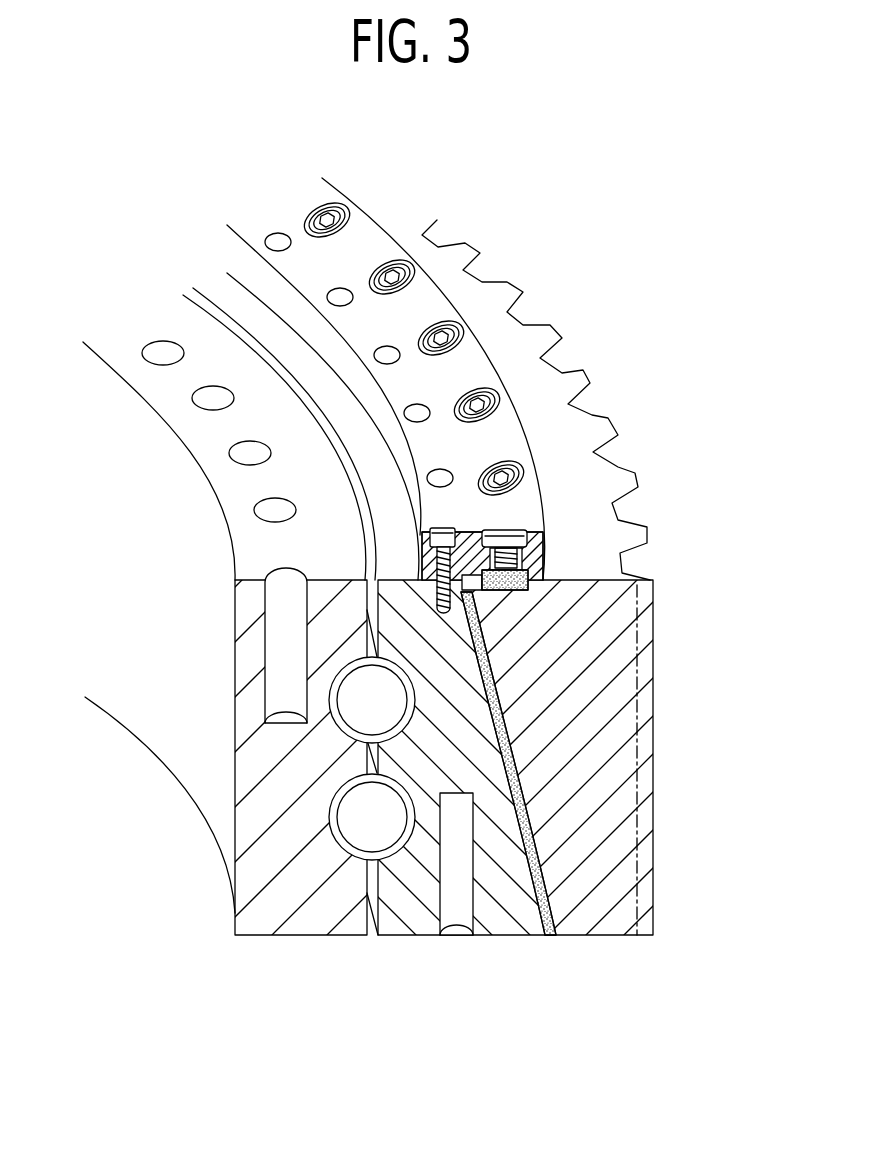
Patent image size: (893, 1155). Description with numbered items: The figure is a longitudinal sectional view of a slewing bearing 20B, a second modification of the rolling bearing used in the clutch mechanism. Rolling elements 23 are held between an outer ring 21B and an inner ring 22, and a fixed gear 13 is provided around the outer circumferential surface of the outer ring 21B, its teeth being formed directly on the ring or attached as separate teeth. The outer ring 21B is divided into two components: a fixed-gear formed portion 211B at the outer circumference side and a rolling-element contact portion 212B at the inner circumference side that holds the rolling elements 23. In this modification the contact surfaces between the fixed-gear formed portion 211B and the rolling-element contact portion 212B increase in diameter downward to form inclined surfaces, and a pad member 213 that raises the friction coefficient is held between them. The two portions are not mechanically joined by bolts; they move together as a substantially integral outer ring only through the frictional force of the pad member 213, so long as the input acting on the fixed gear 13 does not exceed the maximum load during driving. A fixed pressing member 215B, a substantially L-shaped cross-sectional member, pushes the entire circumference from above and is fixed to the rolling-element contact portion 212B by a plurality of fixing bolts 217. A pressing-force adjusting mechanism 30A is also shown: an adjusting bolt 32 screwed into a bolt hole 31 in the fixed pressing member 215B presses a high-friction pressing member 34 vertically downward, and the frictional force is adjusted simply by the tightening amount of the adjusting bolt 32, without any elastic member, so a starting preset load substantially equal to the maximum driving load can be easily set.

The fixed gear 13 is at (637, 492).
The slewing bearing 20B is at (637, 263).
The outer ring 21B is at (402, 937).
The inner ring 22 is at (313, 937).
The rolling elements 23 is at (357, 810).
The pressing-force adjusting mechanism 30A is at (512, 532).
The bolt hole 31 is at (543, 555).
The adjusting bolt 32 is at (490, 528).
The pressing member 34 is at (528, 583).
The fixed-gear formed portion 211B is at (595, 937).
The rolling-element contact portion 212B is at (480, 937).
The pad member 213 is at (548, 937).
The fixed pressing member 215B is at (437, 375).
The fixing bolts 217 is at (280, 240).